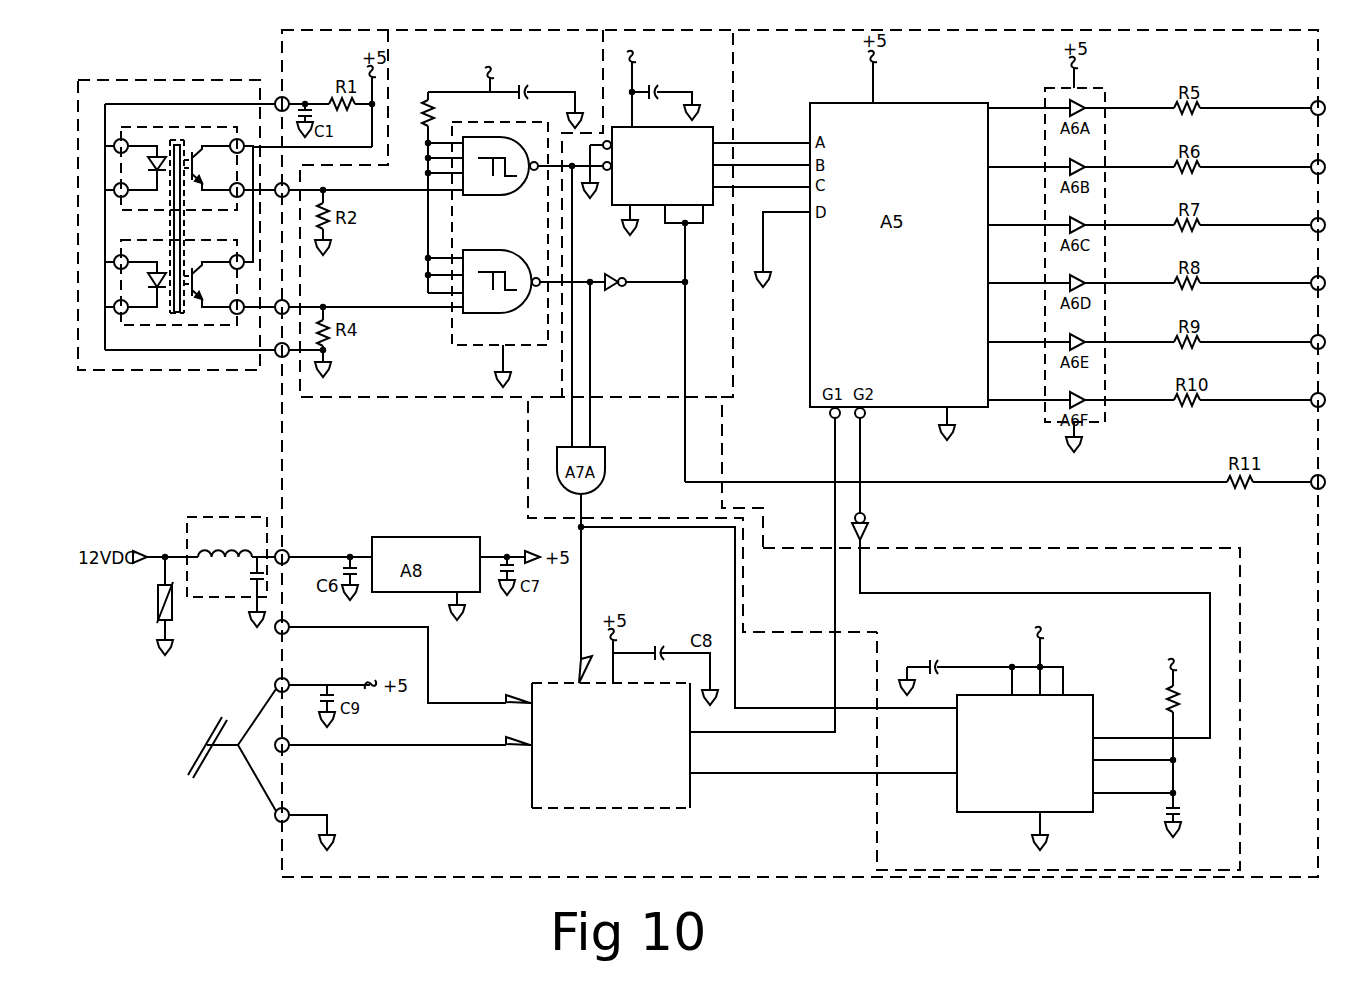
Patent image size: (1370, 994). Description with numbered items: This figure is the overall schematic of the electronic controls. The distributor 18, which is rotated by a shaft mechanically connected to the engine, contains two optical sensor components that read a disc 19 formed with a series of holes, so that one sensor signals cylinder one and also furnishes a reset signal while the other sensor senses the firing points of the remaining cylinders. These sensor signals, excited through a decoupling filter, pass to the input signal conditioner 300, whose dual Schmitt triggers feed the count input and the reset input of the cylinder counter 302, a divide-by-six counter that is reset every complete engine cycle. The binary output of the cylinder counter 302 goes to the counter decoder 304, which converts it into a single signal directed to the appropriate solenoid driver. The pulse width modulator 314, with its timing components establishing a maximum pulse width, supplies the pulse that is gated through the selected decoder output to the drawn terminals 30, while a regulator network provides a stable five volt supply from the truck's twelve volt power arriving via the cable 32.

The distributor 18 is at (155, 80).
The disc 19 is at (177, 315).
The display output terminals 30 is at (1331, 416).
The input cable 32 is at (198, 752).
The input signal conditioner 300 is at (404, 404).
The cylinder counter 302 is at (635, 404).
The counter decoder 304 is at (1252, 550).
The pulse width modulator 314 is at (1240, 690).